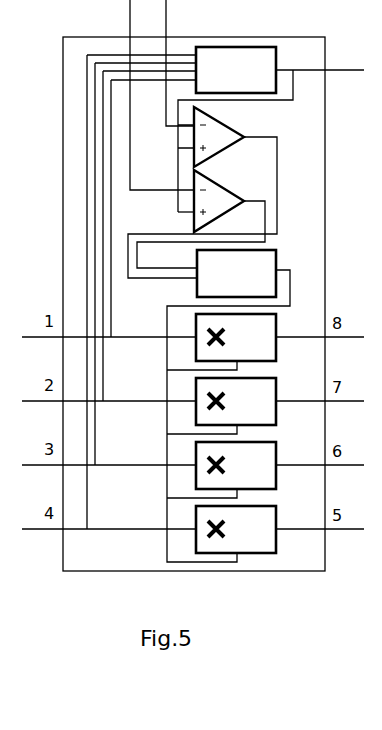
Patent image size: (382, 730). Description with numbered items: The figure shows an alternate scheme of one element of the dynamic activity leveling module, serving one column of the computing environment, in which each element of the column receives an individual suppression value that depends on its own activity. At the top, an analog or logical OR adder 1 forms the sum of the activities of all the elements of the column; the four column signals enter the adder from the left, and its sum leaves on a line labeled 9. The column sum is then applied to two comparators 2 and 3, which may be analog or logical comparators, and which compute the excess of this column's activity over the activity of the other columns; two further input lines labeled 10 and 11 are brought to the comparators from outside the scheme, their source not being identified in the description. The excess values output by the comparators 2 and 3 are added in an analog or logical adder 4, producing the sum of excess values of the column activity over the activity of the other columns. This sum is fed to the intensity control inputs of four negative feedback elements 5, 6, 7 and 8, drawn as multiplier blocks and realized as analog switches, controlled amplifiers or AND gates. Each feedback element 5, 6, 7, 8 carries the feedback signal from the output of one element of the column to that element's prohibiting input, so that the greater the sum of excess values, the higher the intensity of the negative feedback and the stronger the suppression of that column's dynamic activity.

The adder 1 is at (235, 129).
The comparator 2 is at (202, 192).
The comparator 3 is at (201, 219).
The adder 4 is at (230, 406).
The negative feedback element 5 is at (193, 337).
The negative feedback element 6 is at (193, 401).
The negative feedback element 7 is at (193, 465).
The negative feedback element 8 is at (193, 529).
The sum output 9 is at (320, 59).
The first reference input 10 is at (166, 63).
The second reference input 11 is at (147, 95).